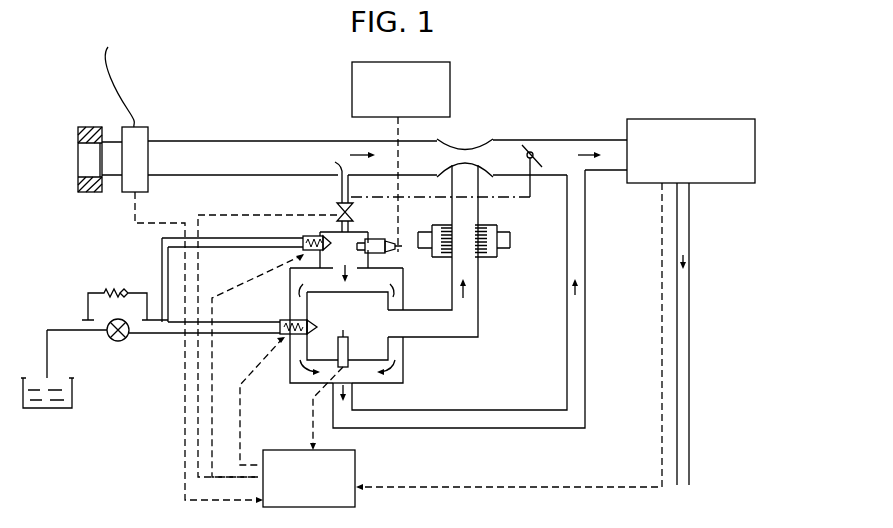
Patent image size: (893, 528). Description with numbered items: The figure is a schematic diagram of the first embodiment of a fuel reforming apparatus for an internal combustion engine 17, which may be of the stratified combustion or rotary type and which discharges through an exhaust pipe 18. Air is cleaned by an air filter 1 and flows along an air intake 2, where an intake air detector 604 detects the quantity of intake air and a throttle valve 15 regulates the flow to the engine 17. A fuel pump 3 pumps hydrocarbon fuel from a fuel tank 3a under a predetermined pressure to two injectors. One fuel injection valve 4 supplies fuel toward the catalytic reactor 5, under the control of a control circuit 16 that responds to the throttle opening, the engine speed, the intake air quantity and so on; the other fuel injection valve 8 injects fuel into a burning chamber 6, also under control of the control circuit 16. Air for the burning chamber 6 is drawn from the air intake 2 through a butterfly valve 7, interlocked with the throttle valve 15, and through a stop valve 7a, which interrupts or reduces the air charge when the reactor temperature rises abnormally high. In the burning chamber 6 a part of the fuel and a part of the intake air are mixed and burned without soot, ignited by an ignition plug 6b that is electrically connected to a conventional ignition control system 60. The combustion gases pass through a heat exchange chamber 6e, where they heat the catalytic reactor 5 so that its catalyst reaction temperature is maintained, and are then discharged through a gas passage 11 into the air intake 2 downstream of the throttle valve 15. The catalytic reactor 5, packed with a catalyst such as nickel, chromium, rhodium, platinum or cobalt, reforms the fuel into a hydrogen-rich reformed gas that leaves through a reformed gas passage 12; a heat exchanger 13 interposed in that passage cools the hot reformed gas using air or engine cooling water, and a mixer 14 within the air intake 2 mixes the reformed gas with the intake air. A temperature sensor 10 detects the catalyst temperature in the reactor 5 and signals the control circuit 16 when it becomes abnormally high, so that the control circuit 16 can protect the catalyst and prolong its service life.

The air filter 1 is at (88, 126).
The air intake 2 is at (150, 140).
The intake air detector 604 is at (148, 180).
The ignition control system 60 is at (352, 82).
The mixer 14 is at (466, 138).
The throttle valve 15 is at (527, 146).
The internal combustion engine 17 is at (650, 119).
The exhaust pipe 18 is at (690, 314).
The heat exchanger 13 is at (503, 245).
The reformed gas passage 12 is at (472, 322).
The gas passage 11 is at (450, 410).
The butterfly valve 7 is at (342, 193).
The stop valve 7a is at (353, 212).
The fuel injection valve 8 is at (305, 236).
The burning chamber 6 is at (352, 257).
The ignition plug 6b is at (393, 254).
The heat exchange chamber 6e is at (291, 368).
The fuel injection valve 4 is at (283, 320).
The catalytic reactor 5 is at (362, 318).
The temperature sensor 10 is at (348, 350).
The fuel pump 3 is at (118, 341).
The fuel tank 3a is at (45, 408).
The control circuit 16 is at (356, 468).